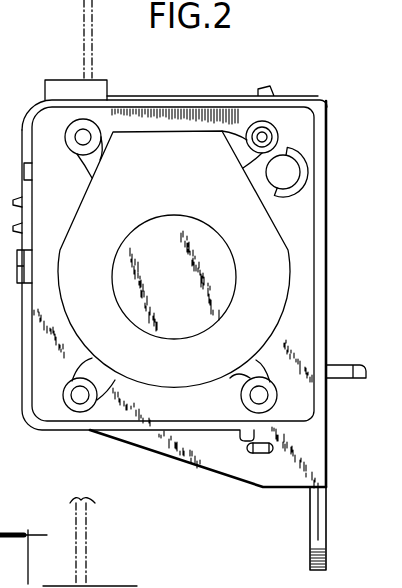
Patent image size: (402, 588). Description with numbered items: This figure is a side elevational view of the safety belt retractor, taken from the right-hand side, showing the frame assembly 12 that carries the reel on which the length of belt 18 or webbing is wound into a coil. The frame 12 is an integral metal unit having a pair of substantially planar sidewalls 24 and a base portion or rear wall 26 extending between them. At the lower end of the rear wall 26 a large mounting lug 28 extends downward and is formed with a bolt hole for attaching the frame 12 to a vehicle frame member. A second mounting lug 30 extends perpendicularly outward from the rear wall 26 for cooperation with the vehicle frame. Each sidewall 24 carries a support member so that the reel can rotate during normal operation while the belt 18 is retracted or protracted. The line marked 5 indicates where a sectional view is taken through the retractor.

The frame assembly 12 is at (190, 469).
The belt 18 is at (78, 3).
The sidewalls 24 is at (258, 470).
The rear wall 26 is at (327, 480).
The mounting lug 28 is at (310, 559).
The second mounting lug 30 is at (356, 379).
The section line 5- 5 is at (68, 542).